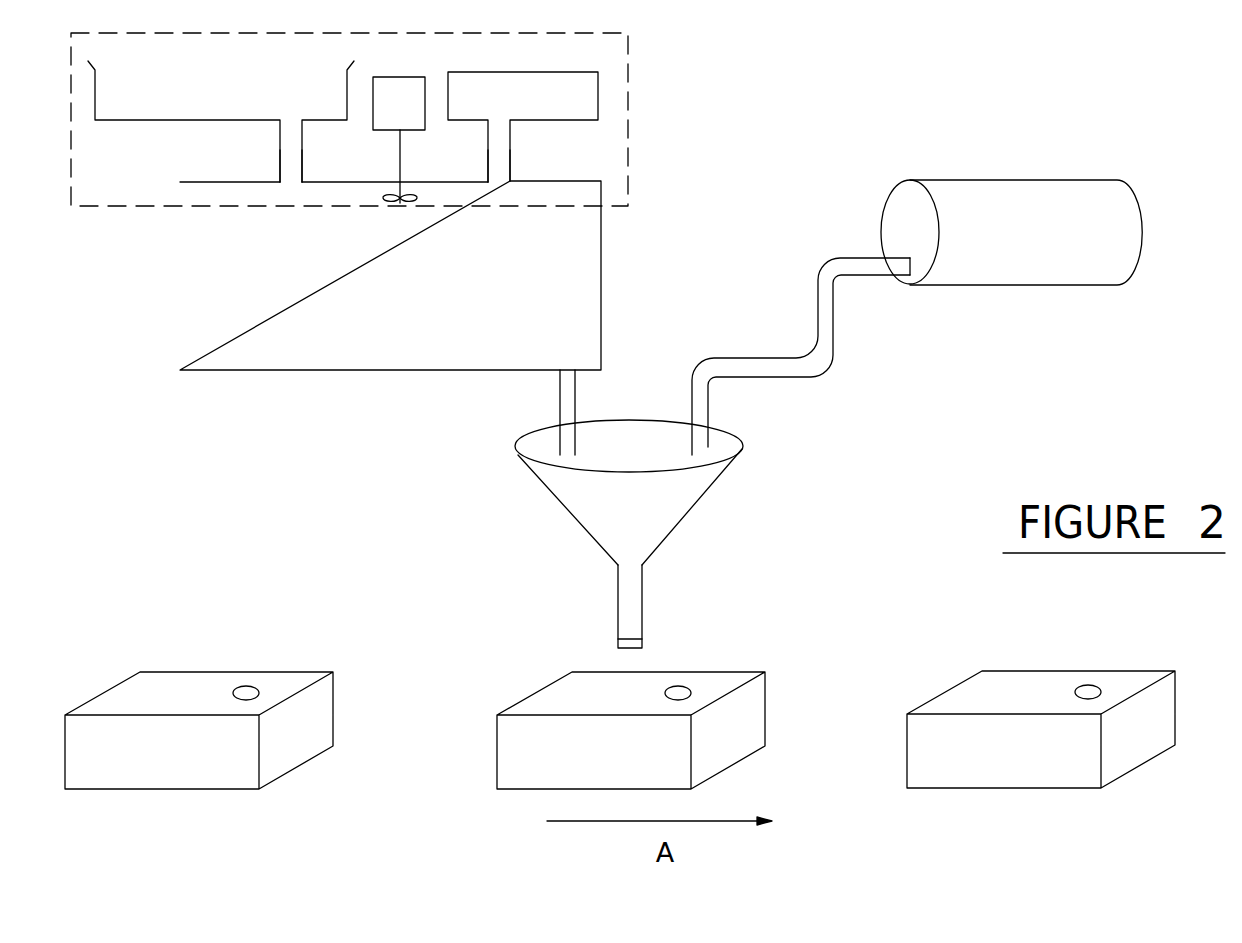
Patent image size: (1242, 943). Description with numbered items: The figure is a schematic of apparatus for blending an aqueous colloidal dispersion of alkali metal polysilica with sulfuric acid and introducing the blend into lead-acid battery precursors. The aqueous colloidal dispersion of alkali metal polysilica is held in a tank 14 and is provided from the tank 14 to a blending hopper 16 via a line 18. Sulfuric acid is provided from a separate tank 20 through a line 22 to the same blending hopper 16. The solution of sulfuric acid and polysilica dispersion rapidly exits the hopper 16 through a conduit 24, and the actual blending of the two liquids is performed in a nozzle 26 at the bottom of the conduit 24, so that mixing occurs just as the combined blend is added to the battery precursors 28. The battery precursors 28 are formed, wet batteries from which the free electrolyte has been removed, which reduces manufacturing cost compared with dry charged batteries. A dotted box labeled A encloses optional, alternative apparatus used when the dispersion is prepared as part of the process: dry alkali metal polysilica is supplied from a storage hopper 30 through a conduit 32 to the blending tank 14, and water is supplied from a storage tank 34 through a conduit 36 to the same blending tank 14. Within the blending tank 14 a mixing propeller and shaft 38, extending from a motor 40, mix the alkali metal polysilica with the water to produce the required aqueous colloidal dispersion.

The tank 14 is at (408, 370).
The blending hopper 16 is at (660, 522).
The line 18 is at (560, 406).
The tank 20 is at (1008, 273).
The line 22 is at (827, 347).
The conduit 24 is at (633, 613).
The nozzle 26 is at (618, 642).
The battery precursors 28 is at (147, 777).
The storage hopper 30 is at (197, 99).
The conduit 32 is at (280, 152).
The storage tank 34 is at (503, 111).
The conduit 36 is at (510, 152).
The mixing propeller and shaft 38 is at (400, 152).
The motor 40 is at (388, 77).